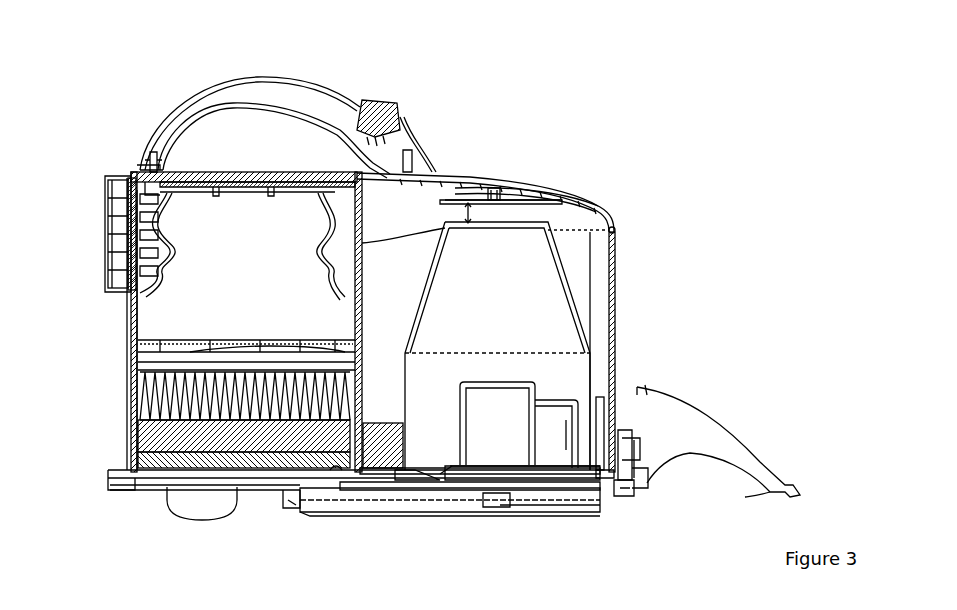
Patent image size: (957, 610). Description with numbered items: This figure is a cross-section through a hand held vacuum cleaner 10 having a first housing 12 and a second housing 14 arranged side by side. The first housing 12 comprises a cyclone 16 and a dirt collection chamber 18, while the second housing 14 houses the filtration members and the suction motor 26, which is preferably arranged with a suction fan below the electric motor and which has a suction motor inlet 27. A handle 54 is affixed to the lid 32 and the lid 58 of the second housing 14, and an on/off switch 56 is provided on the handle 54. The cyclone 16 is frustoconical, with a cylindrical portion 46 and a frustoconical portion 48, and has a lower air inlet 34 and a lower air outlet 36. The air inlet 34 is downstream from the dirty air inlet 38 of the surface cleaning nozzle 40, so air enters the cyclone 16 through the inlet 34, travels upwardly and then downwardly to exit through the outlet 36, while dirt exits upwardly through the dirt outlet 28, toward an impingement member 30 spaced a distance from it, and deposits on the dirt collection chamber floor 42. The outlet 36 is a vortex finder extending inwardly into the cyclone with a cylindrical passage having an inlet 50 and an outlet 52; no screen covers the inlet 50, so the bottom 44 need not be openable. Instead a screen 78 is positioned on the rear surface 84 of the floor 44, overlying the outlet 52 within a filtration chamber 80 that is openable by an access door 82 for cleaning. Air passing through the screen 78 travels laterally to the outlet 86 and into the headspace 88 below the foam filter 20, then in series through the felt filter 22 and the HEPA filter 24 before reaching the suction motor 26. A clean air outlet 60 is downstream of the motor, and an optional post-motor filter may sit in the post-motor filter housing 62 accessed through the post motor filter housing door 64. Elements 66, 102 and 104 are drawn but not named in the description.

The vacuum cleaner 10 is at (660, 130).
The first housing 12 is at (615, 268).
The second housing 14 is at (131, 312).
The cyclone 16 is at (603, 328).
The dirt collection chamber 18 is at (589, 343).
The foam filter 20 is at (138, 452).
The felt filter 22 is at (138, 436).
The HEPA filter 24 is at (150, 404).
The suction motor 26 is at (178, 306).
The suction motor inlet 27 is at (225, 352).
The dirt outlet 28 is at (545, 217).
The impingement member 30 is at (550, 200).
The lid 32 is at (450, 179).
The air inlet 34 is at (571, 450).
The air outlet 36 is at (600, 397).
The dirty air inlet 38 is at (780, 495).
The surface cleaning nozzle 40 is at (757, 451).
The dirt collection chamber floor 42 is at (602, 475).
The bottom 44 is at (432, 467).
The cylindrical portion 46 is at (536, 382).
The frustoconical portion 48 is at (617, 229).
The inlet 50 is at (500, 398).
The outlet 52 is at (494, 468).
The handle 54 is at (295, 77).
The on/off switch 56 is at (380, 102).
The lid 58 is at (196, 176).
The clean air outlet 60 is at (112, 228).
The post-motor filter housing 62 is at (122, 182).
The post motor filter housing door 64 is at (110, 198).
The bottom cover 66 is at (452, 512).
The screen 78 is at (461, 470).
The filtration chamber 80 is at (558, 507).
The access door 82 is at (350, 507).
The rear surface 84 is at (436, 475).
The outlet 86 is at (333, 471).
The headspace 88 is at (202, 474).
The latch 102 is at (633, 452).
The latch catch 104 is at (630, 494).